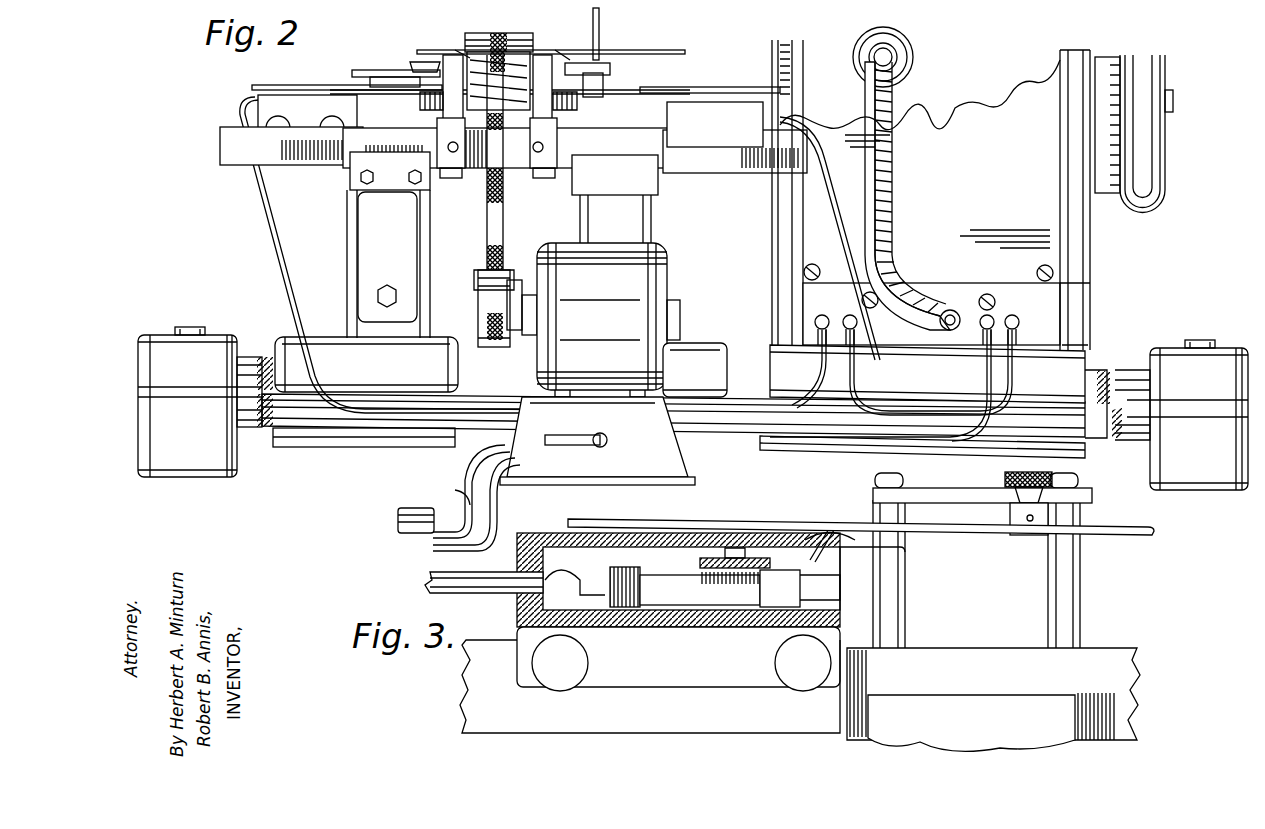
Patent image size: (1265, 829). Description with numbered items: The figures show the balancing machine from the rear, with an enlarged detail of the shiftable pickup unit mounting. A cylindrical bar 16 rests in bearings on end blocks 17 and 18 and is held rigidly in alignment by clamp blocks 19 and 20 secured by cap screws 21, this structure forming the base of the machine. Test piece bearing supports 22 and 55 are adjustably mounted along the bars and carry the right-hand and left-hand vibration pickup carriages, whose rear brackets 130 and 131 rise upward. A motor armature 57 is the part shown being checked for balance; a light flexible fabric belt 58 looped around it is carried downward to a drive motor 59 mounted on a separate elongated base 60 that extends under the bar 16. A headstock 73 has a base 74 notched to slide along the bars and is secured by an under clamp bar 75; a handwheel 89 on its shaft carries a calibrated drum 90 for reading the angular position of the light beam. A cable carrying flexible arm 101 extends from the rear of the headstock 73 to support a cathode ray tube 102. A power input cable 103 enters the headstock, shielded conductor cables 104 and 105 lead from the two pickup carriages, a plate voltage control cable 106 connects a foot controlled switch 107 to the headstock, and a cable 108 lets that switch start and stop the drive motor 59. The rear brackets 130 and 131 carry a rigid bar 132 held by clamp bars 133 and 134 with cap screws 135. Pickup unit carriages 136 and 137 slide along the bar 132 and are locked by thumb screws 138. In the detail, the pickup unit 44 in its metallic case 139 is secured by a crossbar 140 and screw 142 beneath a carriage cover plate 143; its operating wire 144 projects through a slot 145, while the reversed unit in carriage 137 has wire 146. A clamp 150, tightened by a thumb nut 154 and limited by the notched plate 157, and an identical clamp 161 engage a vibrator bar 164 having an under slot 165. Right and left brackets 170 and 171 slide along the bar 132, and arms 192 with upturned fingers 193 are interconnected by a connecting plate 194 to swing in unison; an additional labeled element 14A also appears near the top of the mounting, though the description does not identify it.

In FIG. 2, the arm 14A is at (340, 95).
In FIG. 2, the bar 16 is at (248, 355).
In FIG. 2, the end block 17 is at (1160, 468).
In FIG. 2, the end block 18 is at (232, 470).
In FIG. 2, the clamp block 19 is at (1170, 348).
In FIG. 2, the clamp block 20 is at (210, 340).
In FIG. 2, the cap screw 21 is at (190, 327).
In FIG. 2, the test piece bearing support 22 is at (310, 345).
In FIG. 3, the pickup unit 44 is at (688, 625).
In FIG. 2, the test piece bearing support 55 is at (700, 350).
In FIG. 2, the motor armature 57 is at (522, 44).
In FIG. 2, the flexible fabric belt 58 is at (485, 240).
In FIG. 2, the drive motor 59 is at (660, 282).
In FIG. 2, the elongated base 60 is at (688, 470).
In FIG. 2, the headstock 73 is at (1080, 245).
In FIG. 2, the base 74 is at (1078, 365).
In FIG. 2, the under clamp bar 75 is at (1075, 452).
In FIG. 2, the handwheel 89 is at (1152, 178).
In FIG. 2, the drum 90 is at (1108, 193).
In FIG. 2, the cable carrying flexible arm 101 is at (893, 214).
In FIG. 2, the cathode ray tube 102 is at (913, 56).
In FIG. 2, the power input cable 103 is at (820, 370).
In FIG. 2, the shielded conductor cable 104 is at (258, 245).
In FIG. 3, the shielded conductor cable 104 is at (462, 595).
In FIG. 2, the shielded conductor cable 105 is at (890, 370).
In FIG. 2, the cathode ray plate voltage control cable 106 is at (490, 505).
In FIG. 2, the foot controlled switch 107 is at (398, 518).
In FIG. 2, the cable 108 is at (455, 490).
In FIG. 2, the rear bracket 130 is at (360, 240).
In FIG. 3, the rear bracket 130 is at (1040, 606).
In FIG. 2, the rear bracket 131 is at (655, 222).
In FIG. 2, the rigid bar 132 is at (220, 150).
In FIG. 3, the rigid bar 132 is at (1130, 672).
In FIG. 2, the clamp bar 133 is at (357, 175).
In FIG. 3, the clamp bar 133 is at (978, 747).
In FIG. 2, the clamp bar 134 is at (615, 185).
In FIG. 2, the cap screw 135 is at (360, 182).
In FIG. 2, the pickup unit carriage 136 is at (307, 116).
In FIG. 3, the pickup unit carriage 136 is at (648, 680).
In FIG. 2, the pickup unit carriage 137 is at (715, 124).
In FIG. 2, the thumb screw 138 is at (325, 148).
In FIG. 3, the thumb screw 138 is at (555, 685).
In FIG. 3, the metallic case 139 is at (690, 605).
In FIG. 3, the crossbar 140 is at (700, 563).
In FIG. 3, the screw 142 is at (735, 548).
In FIG. 3, the carriage cover plate 143 is at (517, 540).
In FIG. 3, the pickup unit operating wire 144 is at (778, 548).
In FIG. 3, the slot 145 is at (860, 548).
In FIG. 2, the operating wire 146 is at (680, 100).
In FIG. 2, the clamp 150 is at (420, 84).
In FIG. 3, the clamp 150 is at (1022, 535).
In FIG. 2, the thumb nut 154 is at (410, 66).
In FIG. 3, the thumb nut 154 is at (1005, 482).
In FIG. 2, the plate 157 is at (370, 70).
In FIG. 3, the plate 157 is at (1092, 497).
In FIG. 2, the clamp 161 is at (598, 92).
In FIG. 2, the vibrator bar 164 is at (252, 86).
In FIG. 3, the vibrator bar 164 is at (1135, 537).
In FIG. 3, the slot 165 is at (850, 535).
In FIG. 2, the right bracket 170 is at (457, 170).
In FIG. 2, the left bracket 171 is at (539, 170).
In FIG. 2, the arm 192 is at (465, 55).
In FIG. 2, the finger 193 is at (600, 24).
In FIG. 2, the connecting plate 194 is at (670, 52).